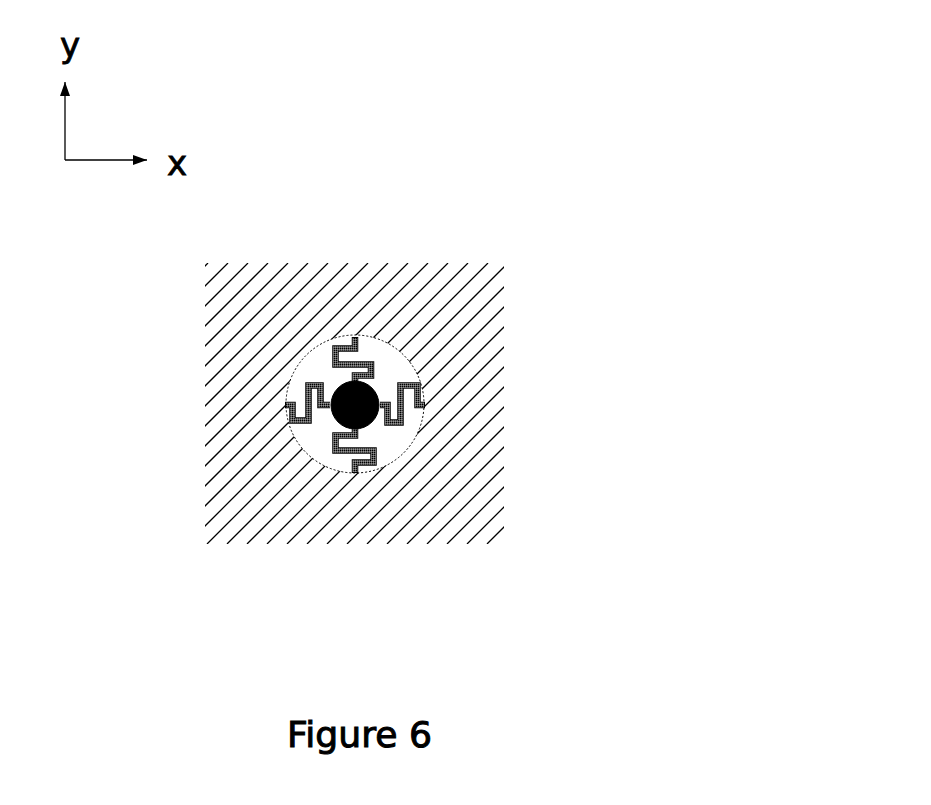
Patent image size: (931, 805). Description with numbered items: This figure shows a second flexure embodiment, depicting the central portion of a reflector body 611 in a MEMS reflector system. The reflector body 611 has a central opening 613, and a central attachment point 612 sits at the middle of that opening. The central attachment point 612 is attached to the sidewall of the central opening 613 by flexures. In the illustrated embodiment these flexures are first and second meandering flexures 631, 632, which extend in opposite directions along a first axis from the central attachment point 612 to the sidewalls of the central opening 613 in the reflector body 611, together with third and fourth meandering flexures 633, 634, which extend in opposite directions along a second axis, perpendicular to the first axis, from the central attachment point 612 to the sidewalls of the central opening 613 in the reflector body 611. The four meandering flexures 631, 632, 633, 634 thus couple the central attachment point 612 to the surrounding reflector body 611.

The reflector body 611 is at (313, 523).
The central attachment point 612 is at (354, 405).
The central opening 613 is at (318, 438).
The first meandering flexure 631 is at (366, 446).
The second meandering flexure 632 is at (380, 362).
The third meandering flexure 633 is at (394, 409).
The fourth meandering flexure 634 is at (306, 390).